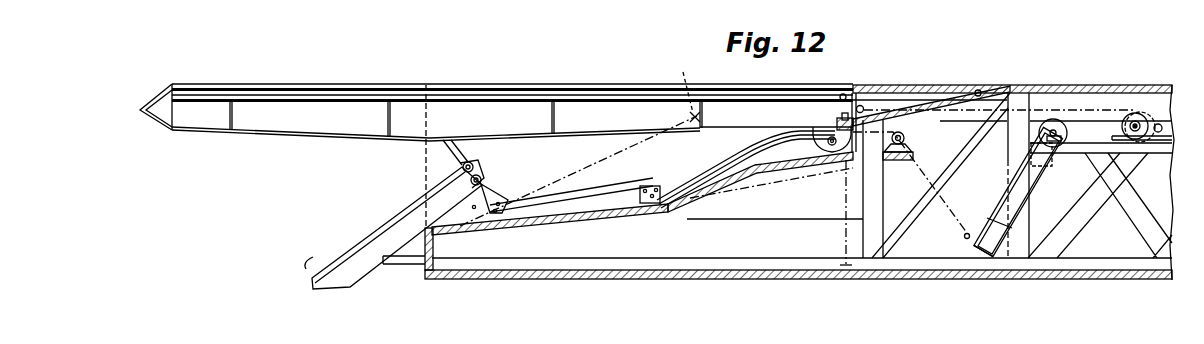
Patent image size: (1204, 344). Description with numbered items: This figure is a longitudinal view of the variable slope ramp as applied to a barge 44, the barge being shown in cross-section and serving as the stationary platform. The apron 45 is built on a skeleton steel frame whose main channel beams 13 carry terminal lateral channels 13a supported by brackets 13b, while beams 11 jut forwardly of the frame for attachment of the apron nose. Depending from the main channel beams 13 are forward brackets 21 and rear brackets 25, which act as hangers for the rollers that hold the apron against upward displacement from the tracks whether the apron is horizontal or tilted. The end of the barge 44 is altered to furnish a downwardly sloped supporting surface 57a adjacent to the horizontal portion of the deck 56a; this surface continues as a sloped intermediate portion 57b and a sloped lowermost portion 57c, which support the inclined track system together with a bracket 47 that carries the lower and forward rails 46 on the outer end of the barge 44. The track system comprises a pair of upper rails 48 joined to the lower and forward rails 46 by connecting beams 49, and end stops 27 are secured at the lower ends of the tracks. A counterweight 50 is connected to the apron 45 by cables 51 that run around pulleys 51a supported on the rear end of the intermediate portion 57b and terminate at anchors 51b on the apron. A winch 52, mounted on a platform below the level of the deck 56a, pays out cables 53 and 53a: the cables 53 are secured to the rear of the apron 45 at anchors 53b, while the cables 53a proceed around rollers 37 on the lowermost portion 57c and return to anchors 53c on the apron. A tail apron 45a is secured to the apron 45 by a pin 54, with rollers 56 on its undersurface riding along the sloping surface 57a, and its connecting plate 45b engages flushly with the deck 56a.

The beams 11 is at (151, 103).
The main channel beams 13 is at (298, 124).
The terminal lateral channels 13a is at (473, 100).
The brackets 13b is at (390, 122).
The forward brackets 21 is at (481, 168).
The rear brackets 25 is at (832, 130).
The end stops 27 is at (309, 263).
The rollers 37 is at (471, 232).
The barge 44 is at (1110, 247).
The apron 45 is at (332, 112).
The tail apron 45a is at (943, 86).
The connecting plate 45b is at (1013, 88).
The lower and forward rails 46 is at (381, 232).
The bracket 47 is at (405, 267).
The upper rails 48 is at (712, 172).
The connecting beams 49 is at (577, 195).
The counterweight 50 is at (992, 248).
The cables 51 is at (936, 172).
The pulleys 51a is at (905, 138).
The anchors 51b is at (729, 91).
The winch 52 is at (1138, 110).
The cables 53 is at (1071, 106).
The cables 53a is at (995, 156).
The anchors 53b is at (864, 108).
The anchors 53c is at (672, 84).
The pin 54 is at (845, 94).
The rollers 56 is at (981, 91).
The deck 56a is at (1103, 87).
The downwardly sloped supporting surface 57a is at (967, 92).
The sloped intermediate portion 57b is at (790, 170).
The sloped lowermost portion 57c is at (601, 222).